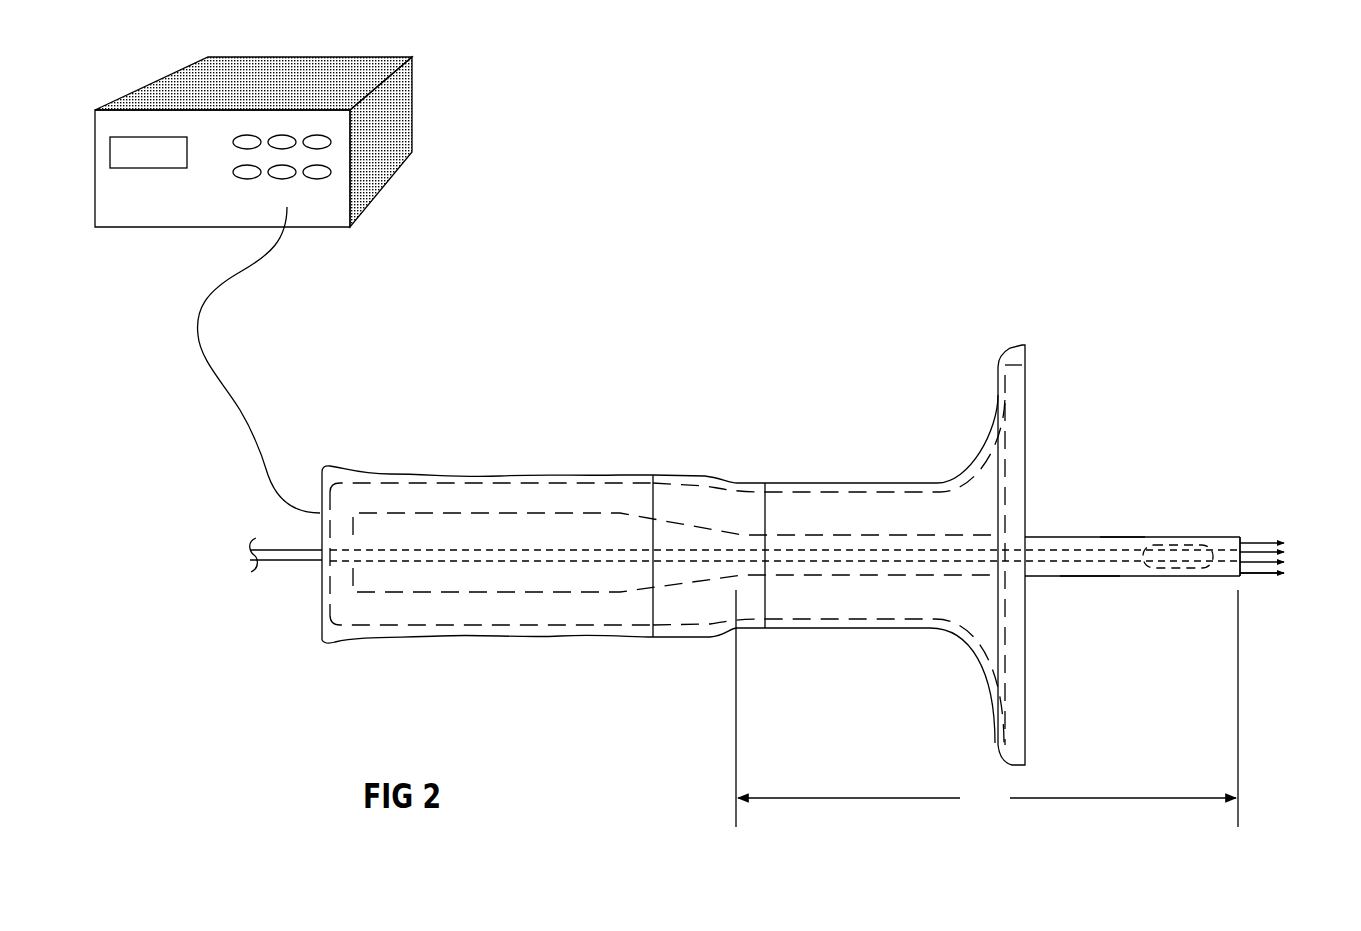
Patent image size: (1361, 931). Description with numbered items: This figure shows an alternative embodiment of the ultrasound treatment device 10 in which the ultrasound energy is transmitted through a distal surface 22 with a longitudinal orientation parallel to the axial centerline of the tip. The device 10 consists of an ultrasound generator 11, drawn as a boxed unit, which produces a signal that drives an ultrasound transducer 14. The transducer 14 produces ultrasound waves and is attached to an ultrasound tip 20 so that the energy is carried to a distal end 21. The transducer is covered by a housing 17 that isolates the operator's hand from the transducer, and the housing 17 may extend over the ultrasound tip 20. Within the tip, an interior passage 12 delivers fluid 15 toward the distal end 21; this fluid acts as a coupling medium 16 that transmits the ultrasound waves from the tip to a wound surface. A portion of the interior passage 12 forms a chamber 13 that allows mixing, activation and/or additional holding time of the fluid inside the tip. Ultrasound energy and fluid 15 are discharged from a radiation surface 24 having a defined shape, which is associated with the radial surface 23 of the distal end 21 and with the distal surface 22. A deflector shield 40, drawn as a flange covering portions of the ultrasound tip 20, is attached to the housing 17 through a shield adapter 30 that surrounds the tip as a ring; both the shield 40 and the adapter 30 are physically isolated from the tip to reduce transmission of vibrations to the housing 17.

The device 10 is at (612, 251).
The ultrasound generator 11 is at (395, 139).
The interior passage 12 is at (1063, 547).
The chamber 13 is at (1190, 553).
The ultrasound transducer 14 is at (540, 509).
The fluid 15 is at (238, 554).
The coupling medium 16 is at (1268, 583).
The housing 17 is at (451, 470).
The ultrasound tip 20 is at (987, 708).
The distal end 21 is at (1098, 588).
The distal surface 22 is at (1252, 544).
The radial surface 23 is at (1121, 534).
The radiation surface 24 is at (1243, 528).
The shield adapter 30 is at (700, 471).
The deflector shield 40 is at (994, 394).